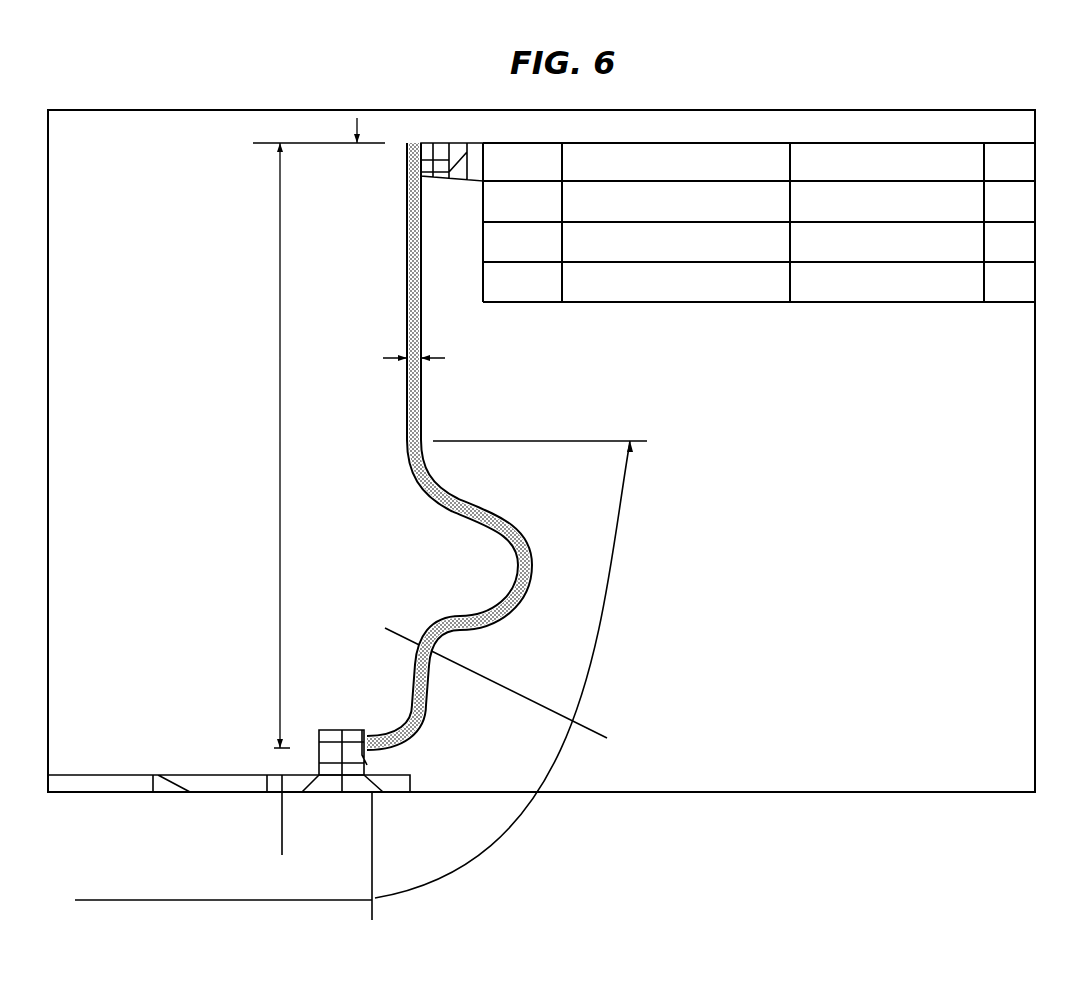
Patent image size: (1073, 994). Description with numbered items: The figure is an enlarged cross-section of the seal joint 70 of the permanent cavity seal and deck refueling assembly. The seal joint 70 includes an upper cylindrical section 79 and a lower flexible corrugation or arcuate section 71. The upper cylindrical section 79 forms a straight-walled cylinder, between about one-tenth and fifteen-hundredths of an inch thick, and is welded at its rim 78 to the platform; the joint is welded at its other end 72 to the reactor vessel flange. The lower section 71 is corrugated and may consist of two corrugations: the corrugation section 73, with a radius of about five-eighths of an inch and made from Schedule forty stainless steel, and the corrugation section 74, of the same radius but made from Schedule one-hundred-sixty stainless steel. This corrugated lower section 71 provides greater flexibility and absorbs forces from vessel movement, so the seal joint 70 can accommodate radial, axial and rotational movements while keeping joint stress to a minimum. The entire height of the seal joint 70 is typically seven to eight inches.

The seal joint 70 is at (652, 574).
The lower flexible corrugation or arcuate section 71 is at (393, 610).
The other end of the joint 72 is at (372, 752).
The corrugation section 73 is at (512, 518).
The corrugation section 74 is at (381, 697).
The rim 78 is at (411, 143).
The upper cylindrical section 79 is at (390, 212).